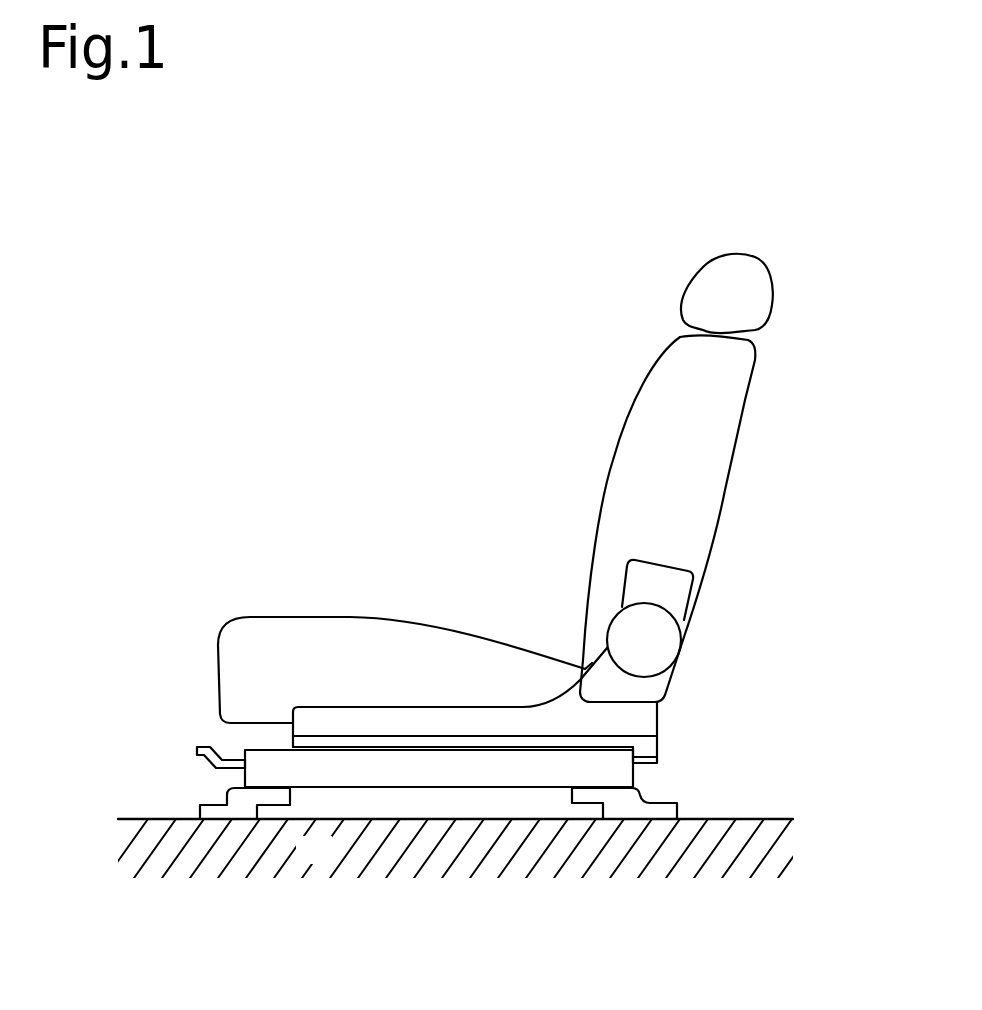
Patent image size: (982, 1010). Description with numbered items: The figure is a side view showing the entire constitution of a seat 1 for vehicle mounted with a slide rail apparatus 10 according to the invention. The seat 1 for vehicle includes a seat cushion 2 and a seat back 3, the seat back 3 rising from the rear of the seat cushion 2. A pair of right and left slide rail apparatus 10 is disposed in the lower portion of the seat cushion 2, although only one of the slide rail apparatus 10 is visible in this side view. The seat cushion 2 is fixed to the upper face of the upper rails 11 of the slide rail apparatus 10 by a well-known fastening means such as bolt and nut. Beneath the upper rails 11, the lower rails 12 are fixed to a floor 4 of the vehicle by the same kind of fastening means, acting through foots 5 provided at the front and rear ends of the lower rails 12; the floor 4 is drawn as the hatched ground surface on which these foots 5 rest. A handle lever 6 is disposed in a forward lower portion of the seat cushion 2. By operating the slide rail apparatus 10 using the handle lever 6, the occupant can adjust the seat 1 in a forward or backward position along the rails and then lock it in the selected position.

The seat for vehicle 1 is at (392, 461).
The seat cushion 2 is at (308, 648).
The seat back 3 is at (708, 477).
The floor 4 is at (747, 832).
The foot 5 is at (638, 805).
The handle lever 6 is at (195, 755).
The slide rail apparatus 10 is at (225, 736).
The upper rail 11 is at (648, 748).
The lower rail 12 is at (343, 767).